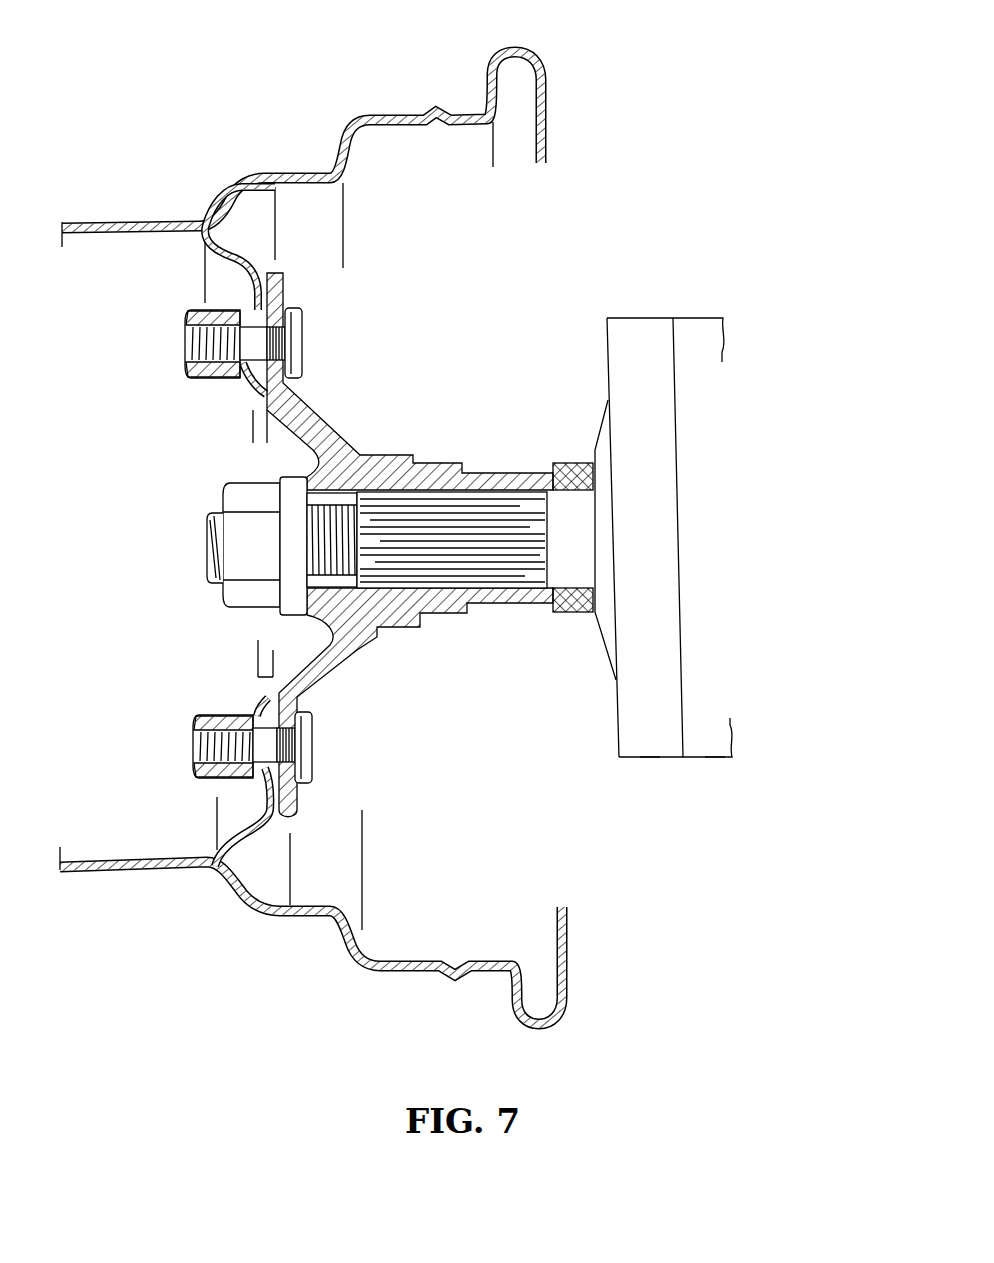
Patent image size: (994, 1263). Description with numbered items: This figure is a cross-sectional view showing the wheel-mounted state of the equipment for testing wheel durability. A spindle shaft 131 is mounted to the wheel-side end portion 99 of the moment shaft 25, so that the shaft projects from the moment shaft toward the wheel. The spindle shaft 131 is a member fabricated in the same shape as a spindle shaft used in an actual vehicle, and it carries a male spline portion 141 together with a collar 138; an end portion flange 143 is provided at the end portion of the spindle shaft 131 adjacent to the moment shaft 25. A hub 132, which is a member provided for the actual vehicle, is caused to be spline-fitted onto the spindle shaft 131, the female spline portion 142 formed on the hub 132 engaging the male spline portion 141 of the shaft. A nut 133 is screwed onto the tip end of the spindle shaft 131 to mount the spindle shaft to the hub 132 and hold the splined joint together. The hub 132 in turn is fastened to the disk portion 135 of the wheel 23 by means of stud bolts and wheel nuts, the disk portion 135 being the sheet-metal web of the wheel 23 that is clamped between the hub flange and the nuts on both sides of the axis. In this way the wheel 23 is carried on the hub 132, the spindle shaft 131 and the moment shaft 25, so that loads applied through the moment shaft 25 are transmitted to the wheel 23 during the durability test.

The wheel 23 is at (388, 113).
The moment shaft 25 is at (697, 313).
The wheel-side end portion 99 is at (712, 760).
The spindle shaft 131 is at (638, 313).
The hub 132 is at (362, 450).
The nut 133 is at (225, 487).
The disk portion 135 is at (250, 278).
The collar 138 is at (568, 463).
The male spline portion 141 is at (482, 490).
The female spline portion 142 is at (458, 590).
The end portion flange 143 is at (648, 760).